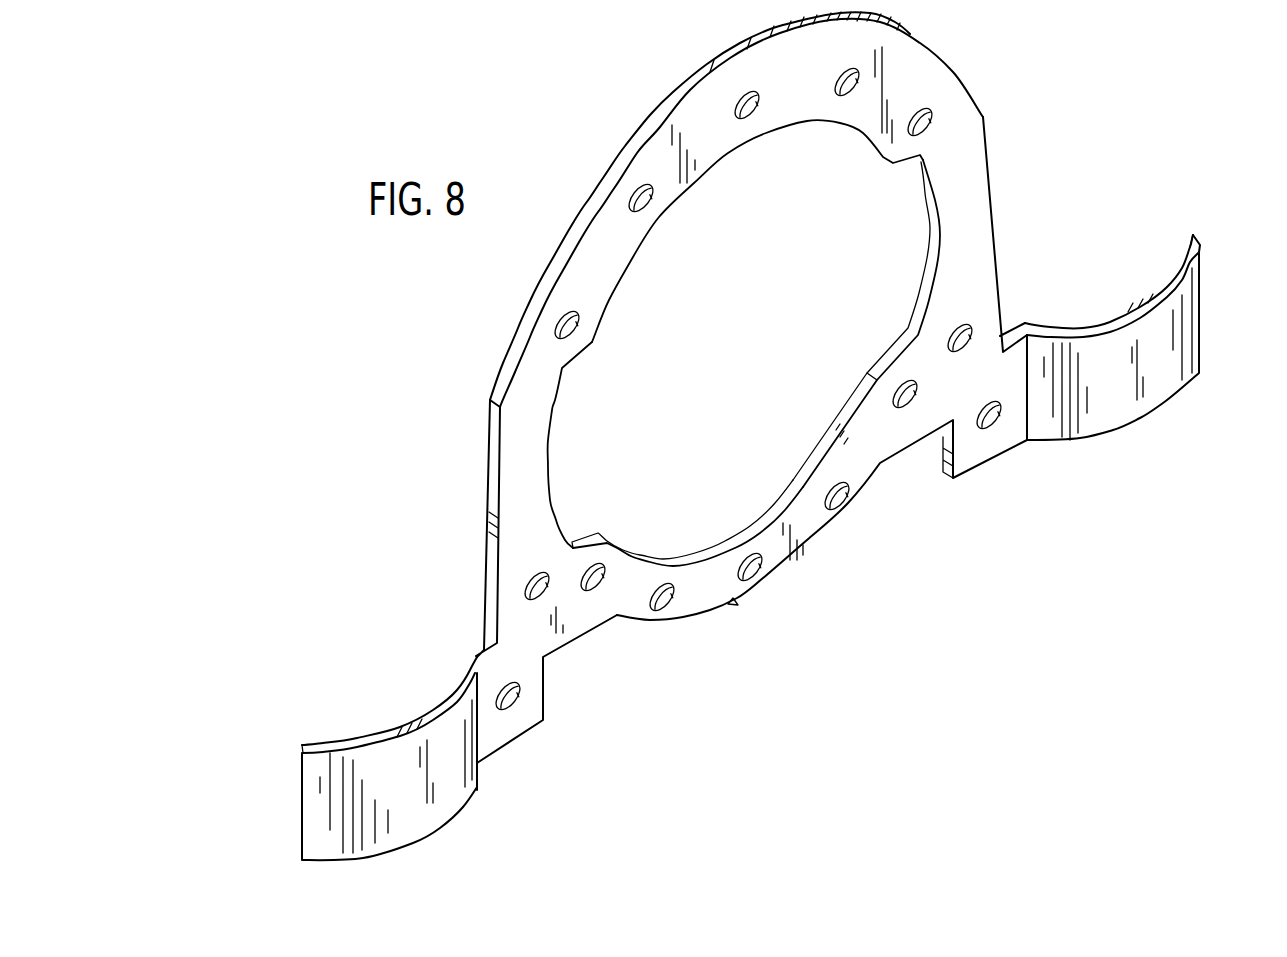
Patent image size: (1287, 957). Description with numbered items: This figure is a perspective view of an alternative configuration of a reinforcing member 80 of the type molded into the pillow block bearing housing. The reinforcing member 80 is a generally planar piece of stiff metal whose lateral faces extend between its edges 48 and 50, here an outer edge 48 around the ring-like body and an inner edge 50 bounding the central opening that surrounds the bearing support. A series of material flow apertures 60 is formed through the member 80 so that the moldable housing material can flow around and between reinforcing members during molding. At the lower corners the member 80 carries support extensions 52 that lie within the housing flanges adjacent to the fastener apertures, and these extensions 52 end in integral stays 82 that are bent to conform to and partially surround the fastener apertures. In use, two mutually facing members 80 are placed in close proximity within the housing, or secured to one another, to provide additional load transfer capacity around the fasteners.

The reinforcing member 80 is at (580, 159).
The edge 48 is at (489, 475).
The edge 50 is at (927, 205).
The material flow apertures 60 is at (650, 277).
The support extensions 52 is at (1199, 308).
The integral stays 82 is at (1153, 390).